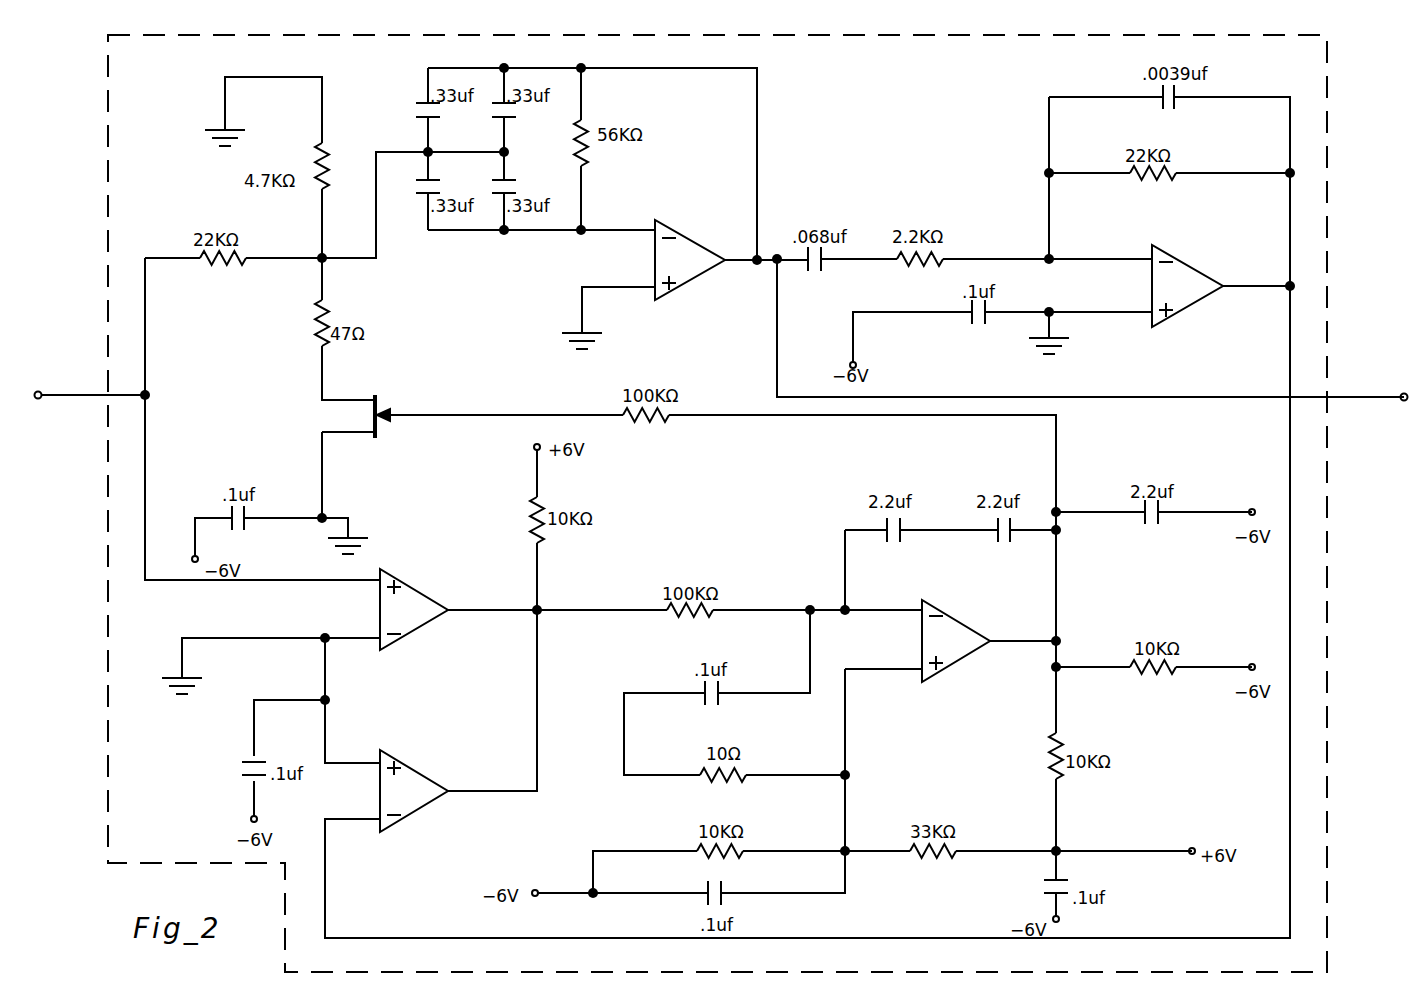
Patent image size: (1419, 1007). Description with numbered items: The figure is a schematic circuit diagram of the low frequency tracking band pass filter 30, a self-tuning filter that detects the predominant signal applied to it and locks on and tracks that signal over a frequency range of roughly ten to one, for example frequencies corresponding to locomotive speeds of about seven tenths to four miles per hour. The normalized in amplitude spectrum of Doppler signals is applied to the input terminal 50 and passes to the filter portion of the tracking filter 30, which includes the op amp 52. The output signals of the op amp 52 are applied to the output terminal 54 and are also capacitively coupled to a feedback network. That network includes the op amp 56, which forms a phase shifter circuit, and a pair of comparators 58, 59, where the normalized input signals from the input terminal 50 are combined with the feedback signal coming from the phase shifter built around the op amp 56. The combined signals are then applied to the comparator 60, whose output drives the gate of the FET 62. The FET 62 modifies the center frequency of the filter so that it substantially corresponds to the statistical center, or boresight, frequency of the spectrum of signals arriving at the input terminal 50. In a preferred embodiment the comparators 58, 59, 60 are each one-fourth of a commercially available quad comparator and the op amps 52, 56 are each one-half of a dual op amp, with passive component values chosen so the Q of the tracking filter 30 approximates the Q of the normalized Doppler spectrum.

The tracking filter 30 is at (1327, 145).
The input terminal 50 is at (38, 391).
The op amp 52 is at (685, 237).
The output terminal 54 is at (1401, 394).
The op amp 56 is at (1230, 244).
The comparator 58 is at (446, 566).
The comparator 59 is at (415, 770).
The comparator 60 is at (955, 620).
The FET 62 is at (375, 395).